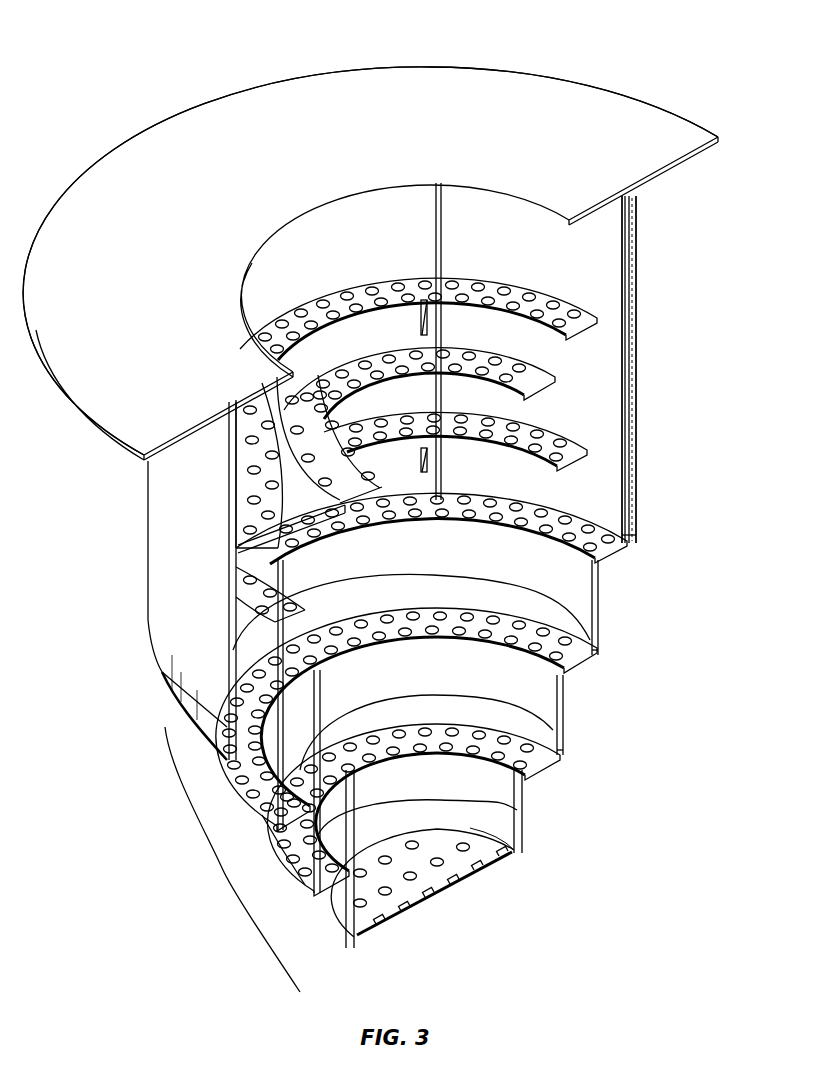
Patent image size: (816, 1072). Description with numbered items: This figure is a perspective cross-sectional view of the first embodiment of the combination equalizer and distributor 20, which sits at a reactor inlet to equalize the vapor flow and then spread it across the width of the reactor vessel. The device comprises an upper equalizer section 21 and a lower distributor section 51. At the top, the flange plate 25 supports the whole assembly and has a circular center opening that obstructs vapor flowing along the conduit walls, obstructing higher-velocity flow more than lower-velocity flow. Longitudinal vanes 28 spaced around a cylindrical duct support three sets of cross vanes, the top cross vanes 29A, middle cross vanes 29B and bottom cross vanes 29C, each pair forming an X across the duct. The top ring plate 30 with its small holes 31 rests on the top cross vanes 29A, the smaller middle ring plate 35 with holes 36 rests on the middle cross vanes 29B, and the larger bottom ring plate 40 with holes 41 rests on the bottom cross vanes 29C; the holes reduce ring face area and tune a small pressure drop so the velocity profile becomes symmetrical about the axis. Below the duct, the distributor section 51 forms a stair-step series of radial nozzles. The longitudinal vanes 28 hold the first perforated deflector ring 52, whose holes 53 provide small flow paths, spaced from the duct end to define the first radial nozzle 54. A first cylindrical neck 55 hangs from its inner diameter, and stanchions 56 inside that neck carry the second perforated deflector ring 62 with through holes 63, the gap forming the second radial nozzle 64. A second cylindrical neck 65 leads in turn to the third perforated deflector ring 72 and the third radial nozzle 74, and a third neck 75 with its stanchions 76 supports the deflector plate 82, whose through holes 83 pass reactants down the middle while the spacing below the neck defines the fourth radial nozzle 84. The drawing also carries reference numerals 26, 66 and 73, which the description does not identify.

The combination equalizer and distributor 20 is at (132, 68).
The equalizer section 21 is at (705, 492).
The flange plate 25 is at (618, 108).
The cylindrical shell wall 26 is at (150, 546).
The longitudinal vanes 28 is at (445, 325).
The top cross vanes 29A is at (420, 322).
The middle cross vanes 29B is at (345, 530).
The bottom cross vanes 29C is at (420, 466).
The top ring plate 30 is at (418, 294).
The holes 31 is at (437, 288).
The middle ring plate 35 is at (421, 419).
The holes 36 is at (345, 385).
The bottom ring plate 40 is at (455, 429).
The holes 41 is at (553, 452).
The distributor section 51 is at (222, 878).
The first perforated deflector ring 52 is at (487, 512).
The holes 53 is at (431, 502).
The first radial nozzle 54 is at (616, 520).
The first cylindrical neck 55 is at (432, 565).
The stanchions 56 is at (300, 583).
The second perforated deflector ring 62 is at (406, 691).
The through holes 63 is at (490, 600).
The second radial nozzle 64 is at (582, 624).
The second cylindrical neck 65 is at (432, 677).
The cylindrical wall 66 is at (322, 688).
The third perforated deflector ring 72 is at (414, 777).
The perforations 73 is at (440, 720).
The third radial nozzle 74 is at (530, 722).
The third neck 75 is at (426, 789).
The stanchions 76 is at (527, 796).
The deflector plate 82 is at (422, 871).
The through holes 83 is at (415, 846).
The fourth radial nozzle 84 is at (497, 830).